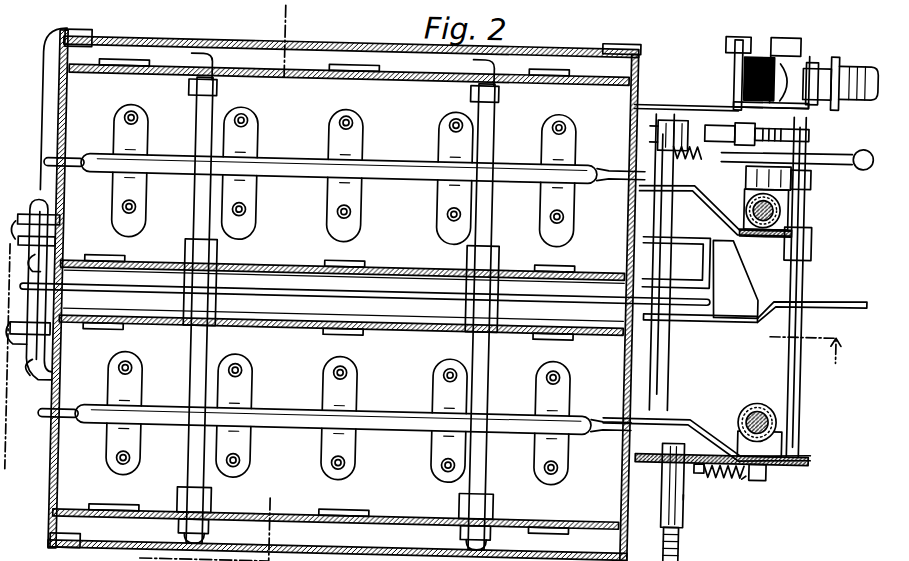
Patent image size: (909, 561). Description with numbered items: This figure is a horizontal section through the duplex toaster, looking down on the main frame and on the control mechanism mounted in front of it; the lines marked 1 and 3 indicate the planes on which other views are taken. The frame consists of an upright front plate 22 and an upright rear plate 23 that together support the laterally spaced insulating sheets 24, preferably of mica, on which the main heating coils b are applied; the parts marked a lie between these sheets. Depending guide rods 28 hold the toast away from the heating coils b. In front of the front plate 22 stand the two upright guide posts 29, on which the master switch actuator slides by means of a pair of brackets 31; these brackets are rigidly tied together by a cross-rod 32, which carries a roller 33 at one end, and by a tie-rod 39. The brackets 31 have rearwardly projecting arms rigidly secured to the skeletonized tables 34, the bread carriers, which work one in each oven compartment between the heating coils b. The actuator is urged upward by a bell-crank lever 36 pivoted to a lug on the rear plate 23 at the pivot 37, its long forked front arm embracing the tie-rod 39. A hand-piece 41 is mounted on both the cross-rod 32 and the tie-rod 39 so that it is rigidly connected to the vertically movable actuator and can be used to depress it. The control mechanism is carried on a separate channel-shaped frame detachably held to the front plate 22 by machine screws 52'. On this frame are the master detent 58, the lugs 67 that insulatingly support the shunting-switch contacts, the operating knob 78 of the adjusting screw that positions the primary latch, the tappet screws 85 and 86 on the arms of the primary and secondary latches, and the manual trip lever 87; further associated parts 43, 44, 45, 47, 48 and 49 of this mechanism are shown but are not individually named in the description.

The section line 1- 1 is at (429, 366).
The section line 3- 3 is at (214, 281).
The front plate 22 is at (631, 458).
The rear plate 23 is at (64, 492).
The insulating sheets 24 is at (562, 72).
The guide rods 28 is at (135, 114).
The guide posts 29 is at (786, 194).
The brackets 31 is at (718, 190).
The cross-rod 32 is at (812, 188).
The roller 33 is at (816, 168).
The skeletonized tables 34 is at (397, 396).
The bell-crank lever 36 is at (716, 284).
The pivot 37 is at (62, 332).
The tie-rod 39 is at (678, 337).
The hand-piece 41 is at (742, 306).
The bracket 43 is at (694, 485).
The vertical bar 44 is at (684, 452).
The cross bar 45 is at (702, 438).
The spring seat 47 is at (752, 463).
The spring 48 is at (708, 460).
The nut 49 is at (776, 458).
The machine screws 52' is at (643, 57).
The master detent 58 is at (750, 168).
The lugs 67 is at (735, 58).
The operating knob 78 is at (856, 52).
The tappet screw 85 is at (656, 108).
The tappet screw 86 is at (806, 124).
The trip lever 87 is at (846, 132).
The tabs a is at (226, 127).
The main heating coils b is at (314, 70).